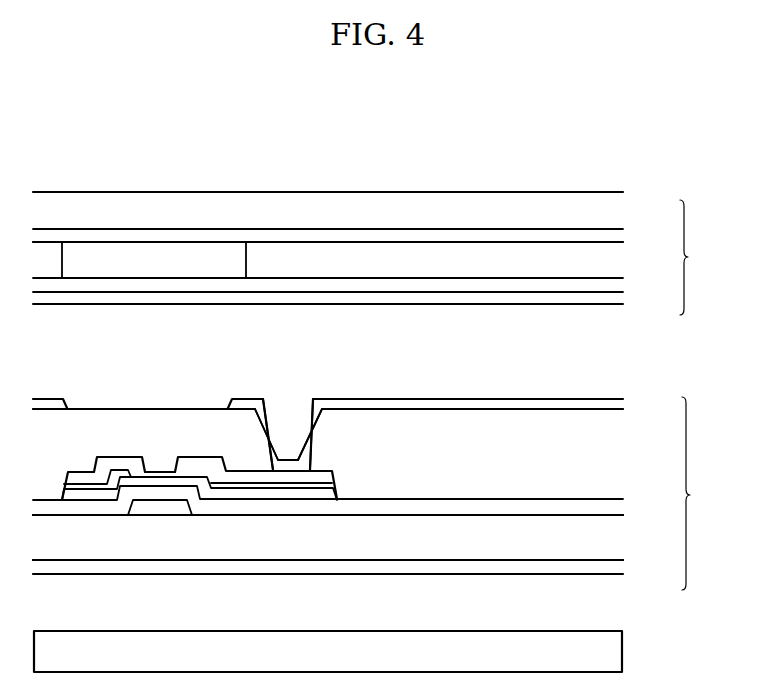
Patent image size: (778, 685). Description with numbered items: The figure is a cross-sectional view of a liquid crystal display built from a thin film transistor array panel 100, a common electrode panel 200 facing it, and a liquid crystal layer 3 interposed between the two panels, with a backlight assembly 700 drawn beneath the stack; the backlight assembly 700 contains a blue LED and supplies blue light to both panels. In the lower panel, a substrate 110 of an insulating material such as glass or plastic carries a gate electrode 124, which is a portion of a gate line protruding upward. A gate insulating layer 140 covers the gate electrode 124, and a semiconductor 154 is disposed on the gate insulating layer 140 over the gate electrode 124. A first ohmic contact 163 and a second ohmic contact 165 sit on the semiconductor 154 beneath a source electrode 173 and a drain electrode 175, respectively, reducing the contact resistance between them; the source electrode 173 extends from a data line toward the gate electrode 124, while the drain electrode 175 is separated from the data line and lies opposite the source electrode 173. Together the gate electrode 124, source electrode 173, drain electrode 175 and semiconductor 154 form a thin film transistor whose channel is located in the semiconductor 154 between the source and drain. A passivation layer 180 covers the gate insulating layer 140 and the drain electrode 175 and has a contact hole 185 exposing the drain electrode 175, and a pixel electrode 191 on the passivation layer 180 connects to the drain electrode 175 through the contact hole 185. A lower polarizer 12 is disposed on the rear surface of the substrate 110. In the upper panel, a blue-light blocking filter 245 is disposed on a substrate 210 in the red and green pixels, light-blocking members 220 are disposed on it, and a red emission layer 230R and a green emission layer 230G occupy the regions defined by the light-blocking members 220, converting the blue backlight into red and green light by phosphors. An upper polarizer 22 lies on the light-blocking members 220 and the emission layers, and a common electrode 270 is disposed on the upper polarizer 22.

The substrate 210 is at (613, 210).
The blue-light blocking filter 245 is at (613, 236).
The light-blocking member 220 is at (147, 273).
The red emission layer 230R is at (60, 273).
The green emission layer 230G is at (457, 273).
The upper polarizer 22 is at (613, 285).
The common electrode 270 is at (613, 298).
The common electrode panel 200 is at (701, 257).
The liquid crystal layer 3 is at (613, 352).
The pixel electrode 191 is at (612, 403).
The passivation layer 180 is at (613, 455).
The contact hole 185 is at (311, 428).
The gate insulating layer 140 is at (617, 507).
The substrate 110 is at (613, 537).
The lower polarizer 12 is at (613, 568).
The thin film transistor array panel 100 is at (704, 493).
The gate electrode 124 is at (159, 511).
The semiconductor 154 is at (227, 498).
The first ohmic contact 163 is at (103, 487).
The second ohmic contact 165 is at (272, 488).
The source electrode 173 is at (80, 478).
The drain electrode 175 is at (323, 478).
The backlight assembly 700 is at (623, 651).